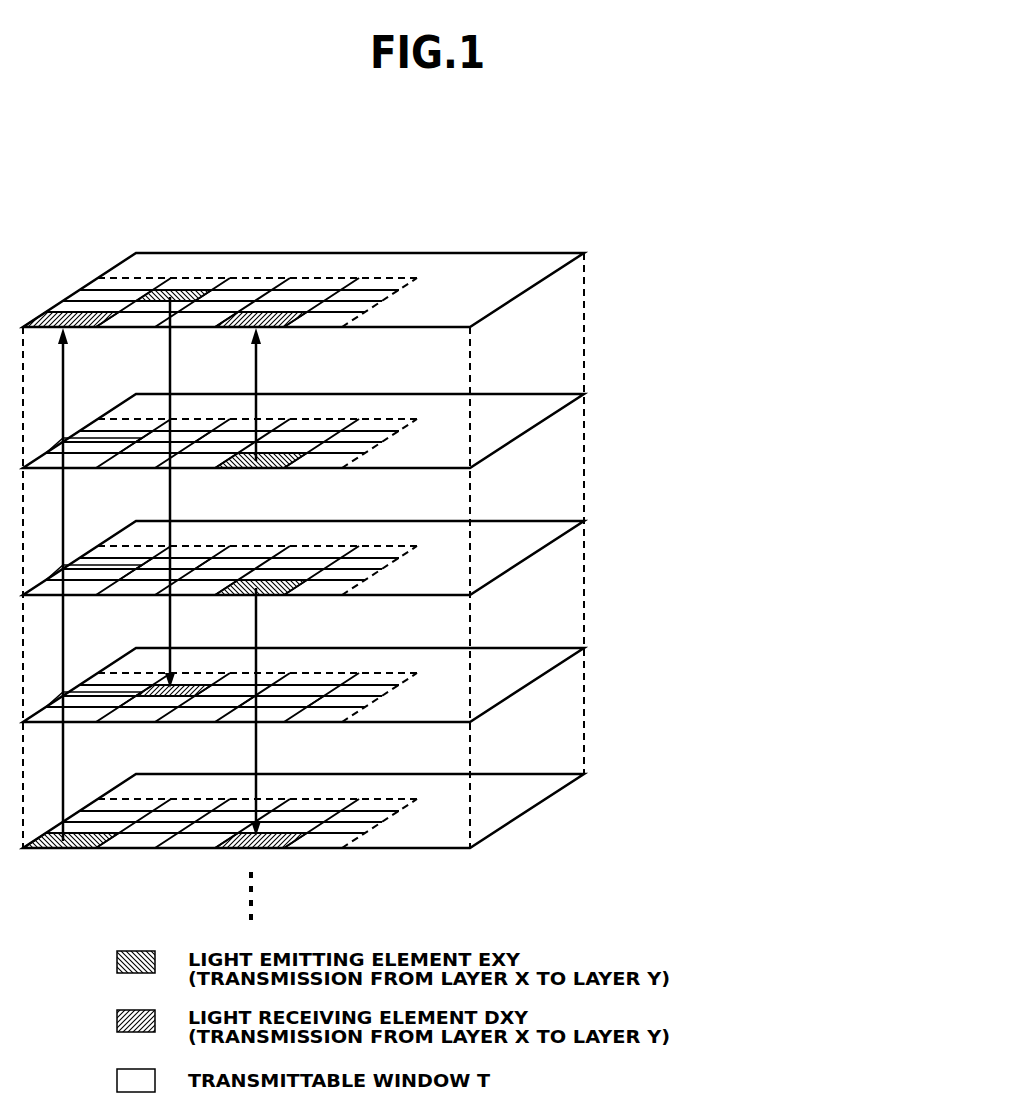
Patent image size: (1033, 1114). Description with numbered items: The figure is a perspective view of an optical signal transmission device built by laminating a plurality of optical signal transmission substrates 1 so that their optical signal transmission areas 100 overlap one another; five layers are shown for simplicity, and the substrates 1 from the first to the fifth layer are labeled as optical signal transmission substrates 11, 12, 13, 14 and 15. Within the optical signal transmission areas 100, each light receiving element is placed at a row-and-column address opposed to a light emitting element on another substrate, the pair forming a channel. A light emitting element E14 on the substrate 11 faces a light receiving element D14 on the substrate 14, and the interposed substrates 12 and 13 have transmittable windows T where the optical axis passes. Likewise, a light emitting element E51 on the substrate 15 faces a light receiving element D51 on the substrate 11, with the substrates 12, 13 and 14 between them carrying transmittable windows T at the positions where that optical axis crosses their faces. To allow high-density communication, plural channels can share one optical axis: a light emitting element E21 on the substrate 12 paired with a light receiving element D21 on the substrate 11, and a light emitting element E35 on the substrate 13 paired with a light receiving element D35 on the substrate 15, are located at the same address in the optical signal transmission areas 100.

The optical signal transmission substrate 1 is at (560, 826).
The optical signal transmission area 100 is at (383, 274).
The optical signal transmission substrate 11 is at (406, 226).
The optical signal transmission substrate 12 is at (540, 403).
The optical signal transmission substrate 13 is at (540, 530).
The optical signal transmission substrate 14 is at (540, 657).
The optical signal transmission substrate 15 is at (540, 782).
The light receiving element D51 is at (60, 320).
The light emitting element E14 is at (175, 292).
The light receiving element D21 is at (266, 314).
The light emitting element E21 is at (276, 454).
The light emitting element E35 is at (274, 587).
The light receiving element D14 is at (185, 686).
The light emitting element E51 is at (83, 833).
The light receiving element D35 is at (274, 835).
The transmittable window T is at (83, 460).